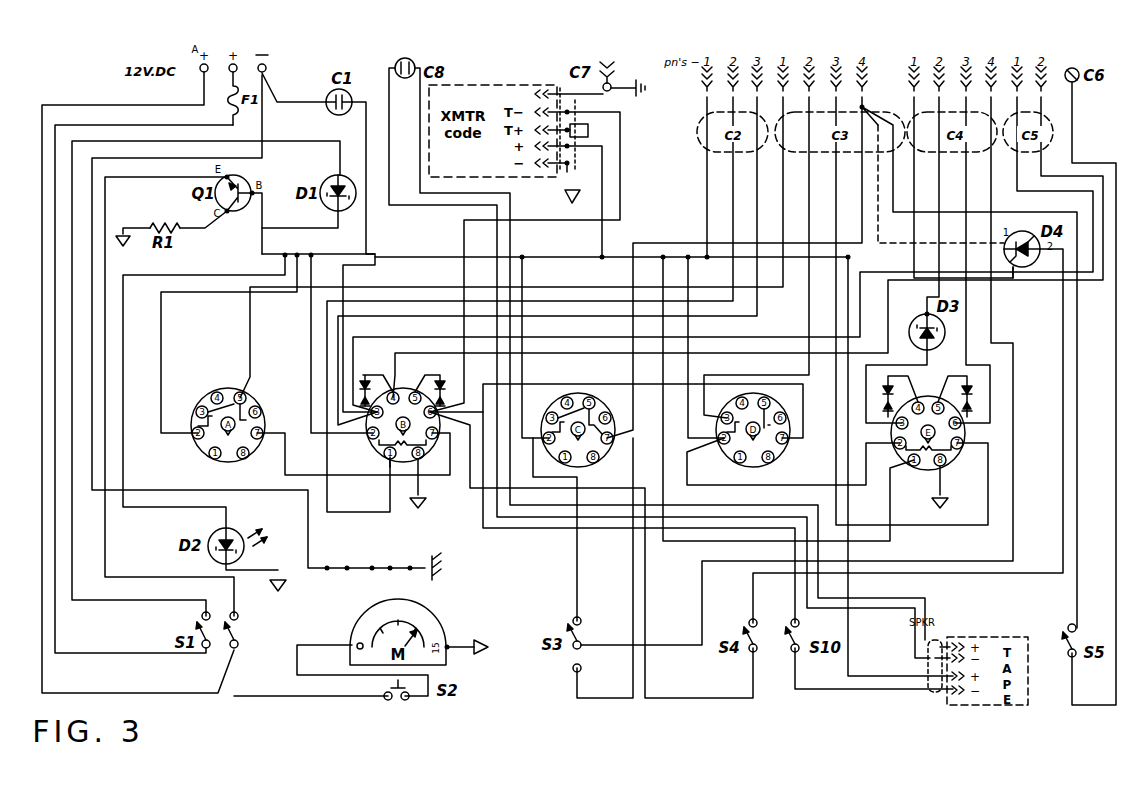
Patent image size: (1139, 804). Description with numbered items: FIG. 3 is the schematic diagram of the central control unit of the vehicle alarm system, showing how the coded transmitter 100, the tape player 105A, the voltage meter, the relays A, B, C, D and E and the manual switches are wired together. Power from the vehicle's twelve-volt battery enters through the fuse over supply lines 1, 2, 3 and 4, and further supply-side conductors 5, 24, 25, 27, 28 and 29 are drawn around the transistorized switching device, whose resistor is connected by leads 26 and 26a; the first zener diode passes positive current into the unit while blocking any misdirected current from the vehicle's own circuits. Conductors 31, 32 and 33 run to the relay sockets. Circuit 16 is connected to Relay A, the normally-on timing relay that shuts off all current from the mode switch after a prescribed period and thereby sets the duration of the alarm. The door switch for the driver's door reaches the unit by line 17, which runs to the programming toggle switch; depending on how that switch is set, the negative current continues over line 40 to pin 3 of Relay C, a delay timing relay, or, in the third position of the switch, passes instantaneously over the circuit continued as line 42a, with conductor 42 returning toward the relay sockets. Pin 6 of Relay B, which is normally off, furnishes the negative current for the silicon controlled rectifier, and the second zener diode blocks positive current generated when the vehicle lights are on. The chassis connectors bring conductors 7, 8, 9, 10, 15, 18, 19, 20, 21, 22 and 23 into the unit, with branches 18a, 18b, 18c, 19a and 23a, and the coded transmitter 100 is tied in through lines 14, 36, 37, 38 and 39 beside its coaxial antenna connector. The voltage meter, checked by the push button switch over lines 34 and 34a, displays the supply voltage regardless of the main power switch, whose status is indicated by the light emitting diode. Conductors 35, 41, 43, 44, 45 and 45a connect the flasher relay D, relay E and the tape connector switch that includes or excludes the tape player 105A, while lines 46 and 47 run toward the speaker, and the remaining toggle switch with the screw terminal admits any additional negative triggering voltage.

The power supply line 1 is at (138, 386).
The fused supply line 2 is at (141, 389).
The pin 3 of Relay C 3 is at (263, 327).
The capacitor line 4 is at (294, 91).
The supply line to socket B 5 is at (357, 257).
The pin 6 of Relay B 6 is at (533, 301).
The connector line 7 is at (707, 173).
The connector line 8 is at (550, 261).
The connector line 9 is at (756, 254).
The connector line 10 is at (911, 311).
The antenna line 14 is at (575, 94).
The connector line 15 is at (862, 100).
The circuit 16 is at (516, 244).
The line 17 is at (797, 371).
The connector line 18 is at (959, 184).
The line 18a is at (591, 558).
The line 18b is at (906, 436).
The line 18c is at (933, 175).
The connector line 19 is at (937, 202).
The line 19a is at (891, 386).
The connector line 20 is at (977, 256).
The connector line 21 is at (721, 251).
The connector line 22 is at (750, 244).
The connector line 23 is at (1093, 393).
The line 23a is at (976, 367).
The line 24 is at (207, 375).
The line 25 is at (165, 392).
The resistor lead 26 is at (203, 223).
The resistor ground lead 26a is at (133, 233).
The line 27 is at (300, 223).
The line 28 is at (268, 223).
The line 29 is at (199, 391).
The line 31 is at (224, 344).
The line 32 is at (336, 344).
The line 33 is at (364, 457).
The line 34 is at (311, 696).
The line 34a is at (362, 670).
The line 35 is at (531, 347).
The line 36 is at (531, 262).
The line 37 is at (616, 281).
The line 38 is at (589, 201).
The ground line 39 is at (573, 183).
The line 40 is at (555, 529).
The line 41 is at (785, 402).
The line 42 is at (609, 571).
The continued circuit 42a is at (741, 272).
The line 43 is at (701, 347).
The line 44 is at (820, 470).
The line 45 is at (639, 517).
The line 45a is at (874, 672).
The line 46 is at (668, 354).
The line 47 is at (655, 363).
The coded transmitter 100 is at (490, 85).
The tape player 105A is at (938, 636).